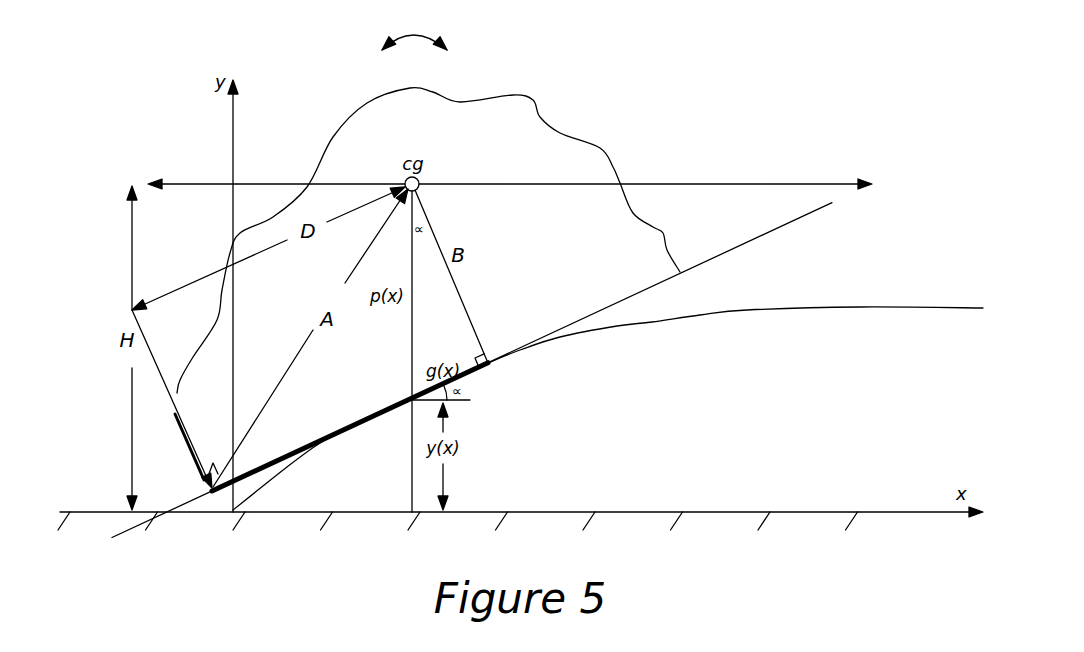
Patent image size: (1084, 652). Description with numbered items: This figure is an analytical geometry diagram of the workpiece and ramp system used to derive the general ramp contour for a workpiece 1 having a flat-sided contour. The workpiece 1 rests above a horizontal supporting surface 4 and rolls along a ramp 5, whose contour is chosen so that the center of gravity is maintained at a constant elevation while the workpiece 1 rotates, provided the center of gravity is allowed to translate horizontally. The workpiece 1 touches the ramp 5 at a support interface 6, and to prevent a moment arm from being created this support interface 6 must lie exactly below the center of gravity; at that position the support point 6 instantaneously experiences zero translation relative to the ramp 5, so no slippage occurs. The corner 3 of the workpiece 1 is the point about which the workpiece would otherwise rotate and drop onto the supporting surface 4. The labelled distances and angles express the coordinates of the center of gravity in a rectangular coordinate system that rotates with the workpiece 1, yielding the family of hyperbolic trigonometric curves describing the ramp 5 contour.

The workpiece 1 is at (600, 149).
The corner 3 is at (208, 487).
The supporting surface 4 is at (600, 512).
The ramp 5 is at (652, 322).
The support interface 6 is at (409, 396).